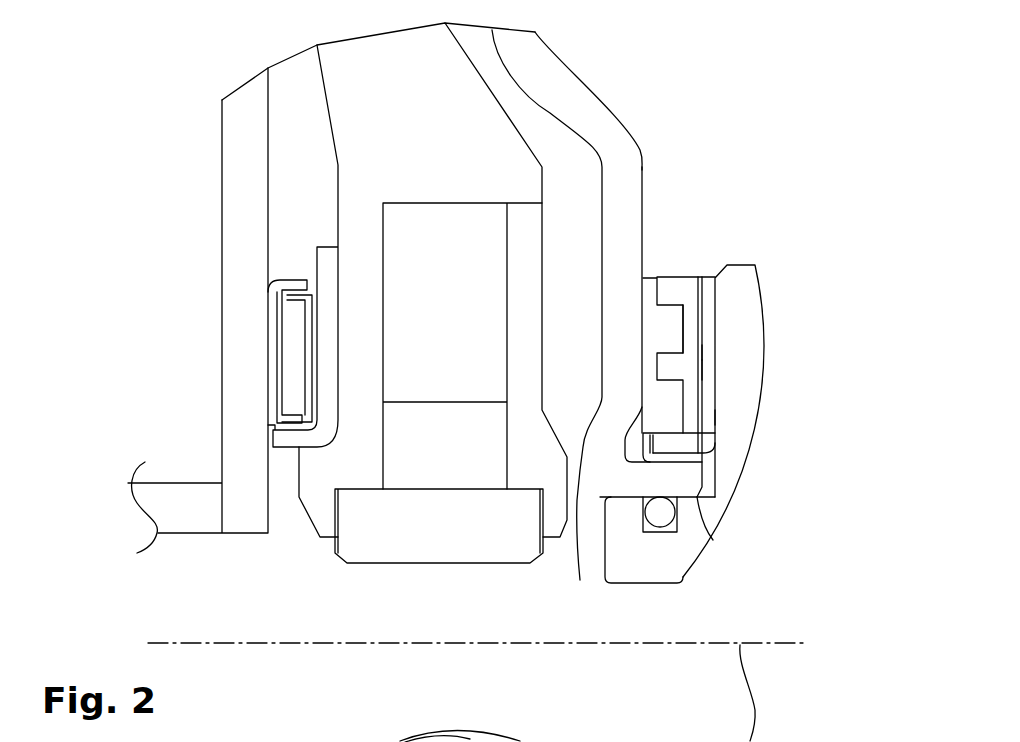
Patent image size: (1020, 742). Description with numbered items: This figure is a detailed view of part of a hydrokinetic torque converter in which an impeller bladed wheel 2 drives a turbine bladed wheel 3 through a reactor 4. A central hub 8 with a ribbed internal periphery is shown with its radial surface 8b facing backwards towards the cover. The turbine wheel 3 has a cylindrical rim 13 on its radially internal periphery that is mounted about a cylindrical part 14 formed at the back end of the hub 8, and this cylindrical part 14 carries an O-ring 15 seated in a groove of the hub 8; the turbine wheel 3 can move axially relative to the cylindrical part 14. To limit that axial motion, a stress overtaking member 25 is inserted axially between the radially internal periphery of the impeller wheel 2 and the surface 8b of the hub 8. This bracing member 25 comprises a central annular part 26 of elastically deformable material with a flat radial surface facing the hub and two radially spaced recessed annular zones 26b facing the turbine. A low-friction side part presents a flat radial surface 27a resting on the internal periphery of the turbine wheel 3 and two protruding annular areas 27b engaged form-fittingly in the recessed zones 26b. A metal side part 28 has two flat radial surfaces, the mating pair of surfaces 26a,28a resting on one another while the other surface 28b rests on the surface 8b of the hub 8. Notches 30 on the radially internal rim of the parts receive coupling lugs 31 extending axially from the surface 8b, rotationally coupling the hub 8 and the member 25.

The impeller bladed wheel 2 is at (245, 186).
The turbine bladed wheel 3 is at (537, 80).
The reactor 4 is at (357, 123).
The central hub 8 is at (755, 350).
The radial surface facing backwards 8b is at (702, 353).
The cylindrical rim 13 is at (633, 478).
The cylindrical part 14 is at (713, 540).
The O-ring 15 is at (658, 508).
The stress overtaking member 25 is at (762, 382).
The central annular part 26 is at (688, 323).
The flat radial surfaces 26a,28a is at (702, 370).
The recessed annular zones 26b is at (683, 345).
The flat radial surface 27a is at (642, 307).
The protruding annular areas 27b is at (650, 323).
The side part 28 is at (708, 393).
The flat radial surface 28b is at (717, 418).
The notches 30 is at (652, 452).
The coupling lugs 31 is at (683, 440).